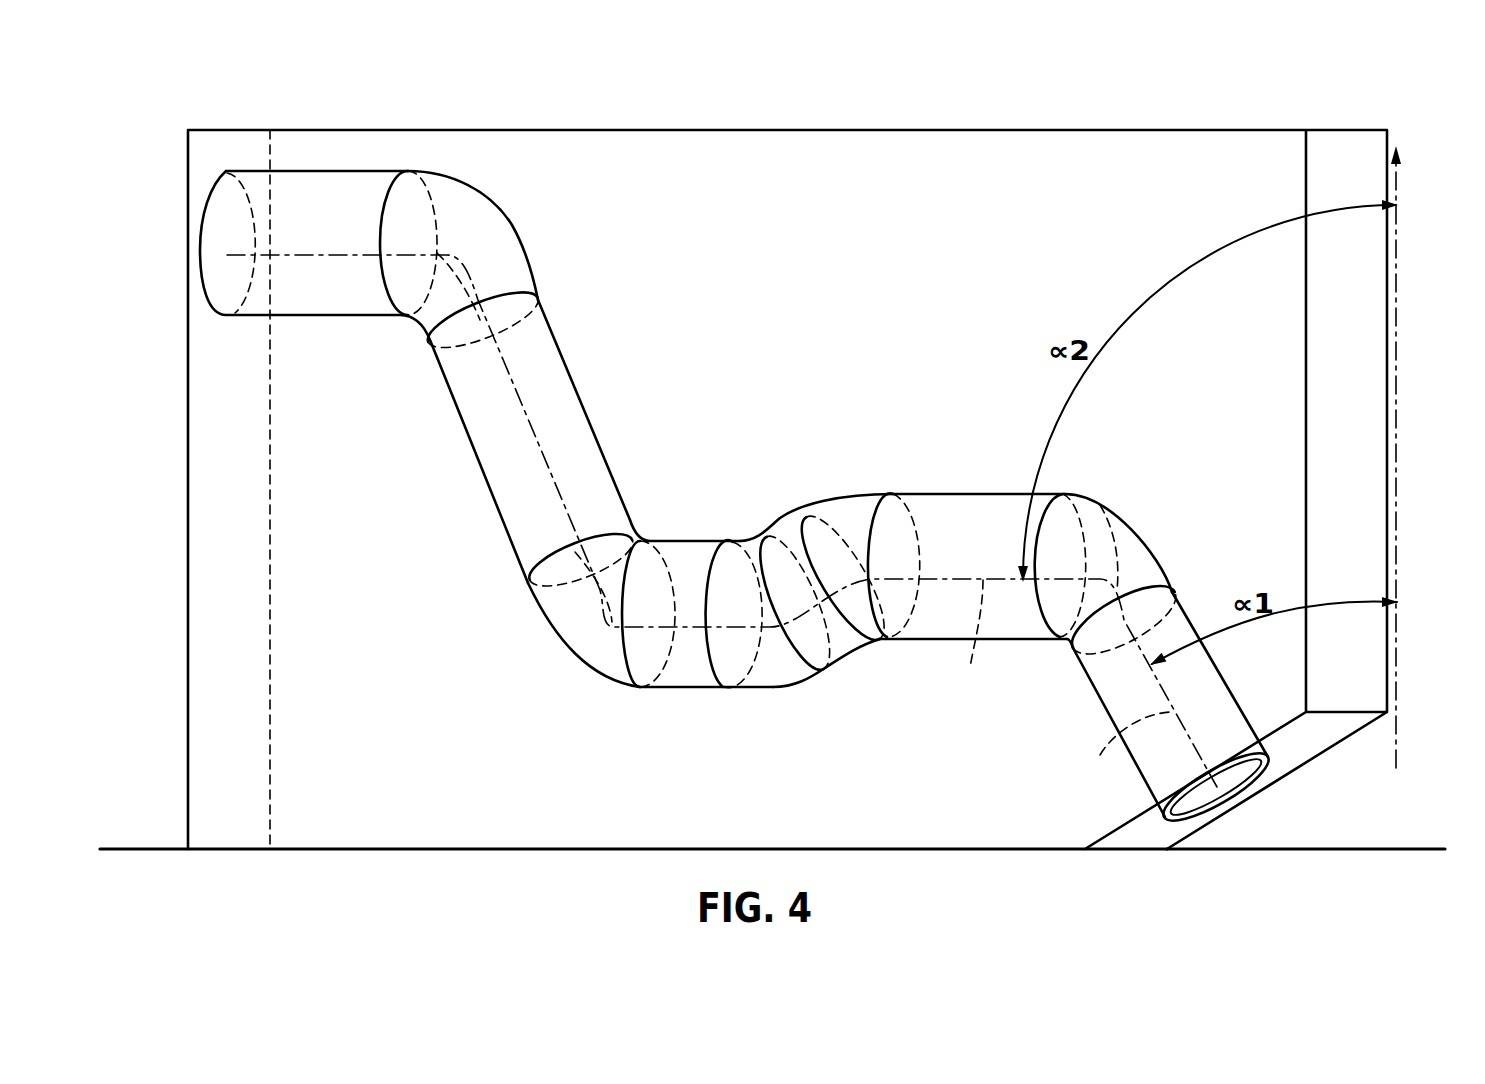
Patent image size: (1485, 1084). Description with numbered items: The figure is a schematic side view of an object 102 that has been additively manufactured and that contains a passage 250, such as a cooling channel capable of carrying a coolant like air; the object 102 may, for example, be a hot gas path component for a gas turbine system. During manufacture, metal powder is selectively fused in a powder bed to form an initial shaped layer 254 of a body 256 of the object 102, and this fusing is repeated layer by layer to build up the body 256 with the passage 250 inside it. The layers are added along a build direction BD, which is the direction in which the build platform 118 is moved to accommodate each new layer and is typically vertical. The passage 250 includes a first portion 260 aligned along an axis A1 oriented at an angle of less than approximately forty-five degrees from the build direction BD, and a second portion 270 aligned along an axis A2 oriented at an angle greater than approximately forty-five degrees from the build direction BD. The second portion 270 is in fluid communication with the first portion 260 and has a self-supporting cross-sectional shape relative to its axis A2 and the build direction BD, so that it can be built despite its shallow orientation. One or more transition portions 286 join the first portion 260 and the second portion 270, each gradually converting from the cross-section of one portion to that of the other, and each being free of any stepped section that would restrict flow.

The object 102 is at (787, 463).
The build platform 118 is at (1427, 849).
The passage 250 is at (835, 490).
The initial shaped layer 254 is at (958, 837).
The body 256 is at (910, 369).
The first portion 260 is at (1271, 712).
The second portion 270 is at (785, 515).
The transition portion 286 is at (503, 217).
The axis A1 is at (1126, 749).
The axis A2 is at (970, 638).
The build direction BD is at (1395, 442).